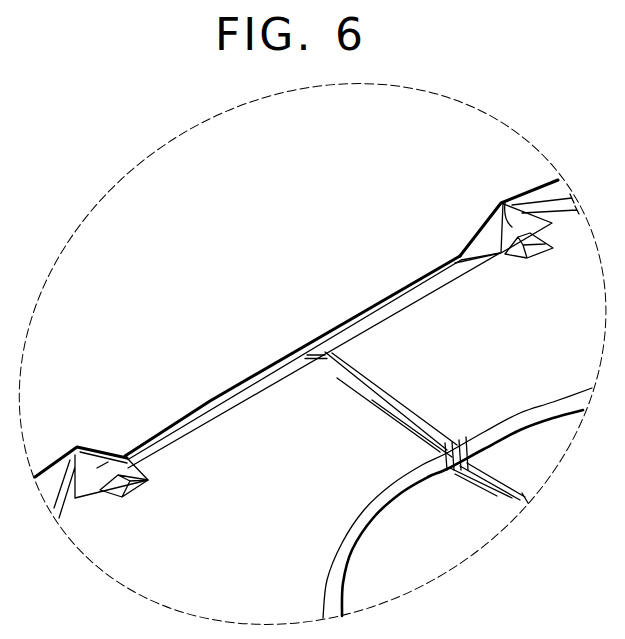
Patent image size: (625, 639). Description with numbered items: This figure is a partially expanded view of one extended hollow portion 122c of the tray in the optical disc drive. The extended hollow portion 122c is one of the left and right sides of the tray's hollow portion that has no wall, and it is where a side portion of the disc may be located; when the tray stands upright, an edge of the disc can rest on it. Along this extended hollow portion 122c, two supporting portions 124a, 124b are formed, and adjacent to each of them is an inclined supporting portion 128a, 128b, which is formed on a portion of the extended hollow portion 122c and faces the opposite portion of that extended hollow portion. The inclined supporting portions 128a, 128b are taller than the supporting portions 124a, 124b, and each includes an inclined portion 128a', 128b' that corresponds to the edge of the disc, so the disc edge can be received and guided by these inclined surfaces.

The extended hollow portion 122c is at (242, 388).
The supporting portion 124a is at (134, 484).
The supporting portion 124b is at (533, 257).
The inclined supporting portion 128a is at (88, 445).
The inclined portion 128a' is at (120, 416).
The inclined supporting portion 128b is at (477, 217).
The inclined portion 128b' is at (468, 186).